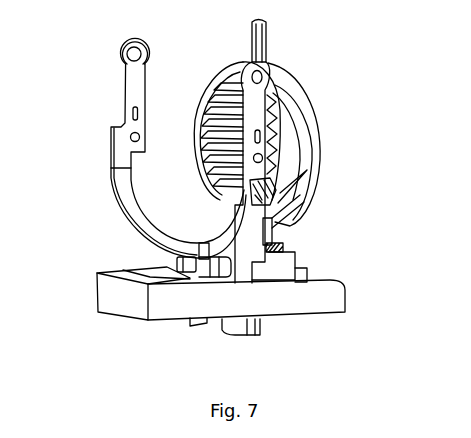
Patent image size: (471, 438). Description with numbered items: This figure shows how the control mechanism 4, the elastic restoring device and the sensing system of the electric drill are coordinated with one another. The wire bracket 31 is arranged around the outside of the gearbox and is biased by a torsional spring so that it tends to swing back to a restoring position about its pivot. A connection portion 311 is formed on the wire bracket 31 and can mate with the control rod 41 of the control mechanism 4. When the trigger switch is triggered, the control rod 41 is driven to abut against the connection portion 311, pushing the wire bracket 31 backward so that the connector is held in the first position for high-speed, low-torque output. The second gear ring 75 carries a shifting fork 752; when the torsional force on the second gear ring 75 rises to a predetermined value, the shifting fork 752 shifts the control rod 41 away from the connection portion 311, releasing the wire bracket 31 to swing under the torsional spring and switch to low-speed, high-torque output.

The control mechanism 4 is at (333, 267).
The wire bracket 31 is at (123, 165).
The connection portion 311 is at (176, 265).
The control rod 41 is at (202, 247).
The second gear ring 75 is at (290, 97).
The shifting fork 752 is at (272, 237).